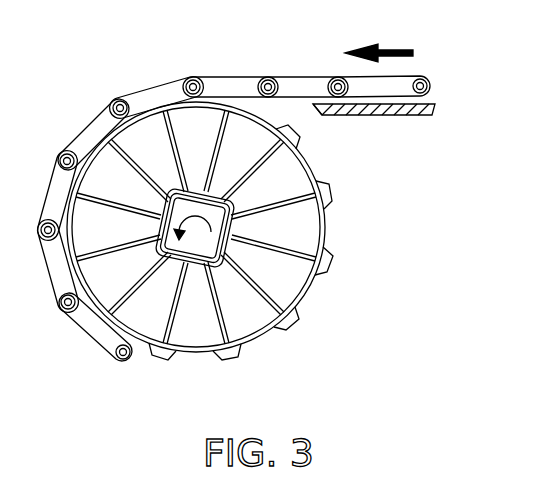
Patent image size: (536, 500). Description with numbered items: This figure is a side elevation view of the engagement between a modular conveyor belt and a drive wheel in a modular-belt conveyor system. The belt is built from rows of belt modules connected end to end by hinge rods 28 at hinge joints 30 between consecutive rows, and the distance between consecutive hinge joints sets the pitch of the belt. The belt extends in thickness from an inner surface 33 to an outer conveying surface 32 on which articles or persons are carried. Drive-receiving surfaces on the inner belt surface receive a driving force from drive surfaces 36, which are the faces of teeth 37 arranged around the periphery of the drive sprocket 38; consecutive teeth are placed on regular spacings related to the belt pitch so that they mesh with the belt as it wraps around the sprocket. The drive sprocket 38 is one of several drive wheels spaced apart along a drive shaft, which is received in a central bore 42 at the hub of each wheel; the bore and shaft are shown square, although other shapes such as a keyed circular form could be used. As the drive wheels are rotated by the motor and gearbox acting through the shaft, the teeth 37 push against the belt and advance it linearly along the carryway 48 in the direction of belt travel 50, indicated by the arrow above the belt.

The hinge rods 28 is at (234, 205).
The hinge joints 30 is at (194, 80).
The outer conveying surface 32 is at (153, 88).
The inner surface 33 is at (303, 104).
The drive surfaces 36 is at (293, 118).
The teeth 37 is at (334, 194).
The drive sprockets 38 is at (305, 287).
The central bore 42 is at (198, 255).
The carryway 48 is at (413, 114).
The direction of belt travel 50 is at (390, 50).